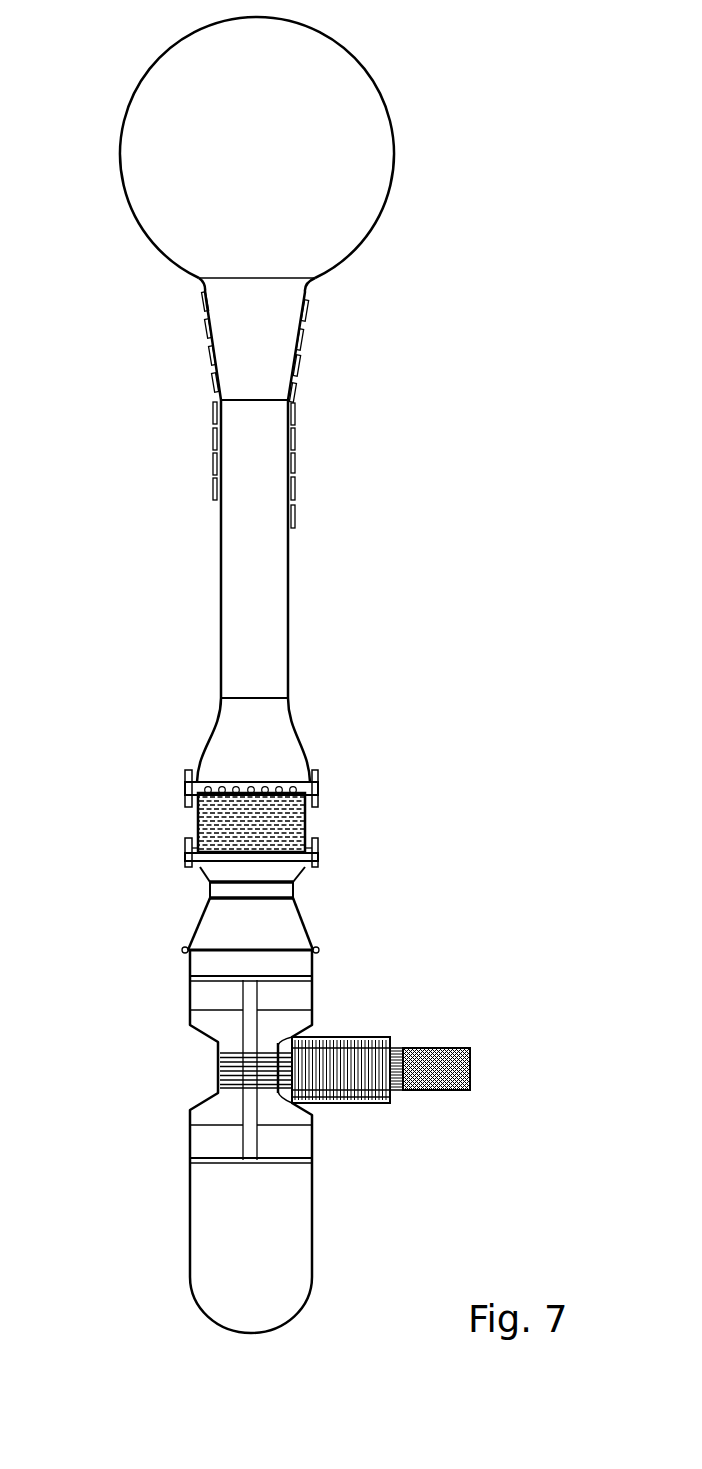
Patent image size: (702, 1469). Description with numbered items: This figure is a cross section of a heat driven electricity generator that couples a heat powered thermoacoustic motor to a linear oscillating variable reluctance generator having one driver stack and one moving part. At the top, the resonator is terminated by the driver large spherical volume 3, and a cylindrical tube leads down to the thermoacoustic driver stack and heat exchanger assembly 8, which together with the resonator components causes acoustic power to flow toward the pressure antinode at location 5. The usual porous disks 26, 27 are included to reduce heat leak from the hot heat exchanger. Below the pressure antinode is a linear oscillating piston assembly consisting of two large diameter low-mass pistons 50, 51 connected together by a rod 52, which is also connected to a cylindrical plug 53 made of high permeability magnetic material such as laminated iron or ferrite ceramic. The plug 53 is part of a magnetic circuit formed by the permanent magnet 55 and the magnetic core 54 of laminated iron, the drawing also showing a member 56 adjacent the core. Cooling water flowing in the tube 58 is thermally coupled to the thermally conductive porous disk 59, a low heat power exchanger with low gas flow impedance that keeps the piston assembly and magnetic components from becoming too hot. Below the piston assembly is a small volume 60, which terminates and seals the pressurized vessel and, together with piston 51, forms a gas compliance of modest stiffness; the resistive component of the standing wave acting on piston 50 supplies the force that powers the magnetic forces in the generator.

The driver large spherical volume 3 is at (363, 245).
The pressure antinode location 5 is at (205, 890).
The thermoacoustic driver stack and heat exchanger assembly 8 is at (306, 843).
The porous disk 26 is at (212, 883).
The porous disk 27 is at (210, 898).
The piston 50 is at (200, 977).
The piston 51 is at (200, 1162).
The rod 52 is at (243, 1025).
The cylindrical plug 53 is at (222, 1075).
The magnetic core 54 is at (395, 1093).
The permanent magnet 55 is at (433, 1045).
The drive cylinder 56 is at (340, 1035).
The cooling tube 58 is at (319, 950).
The thermally conductive porous disk 59 is at (292, 950).
The small volume 60 is at (305, 1295).